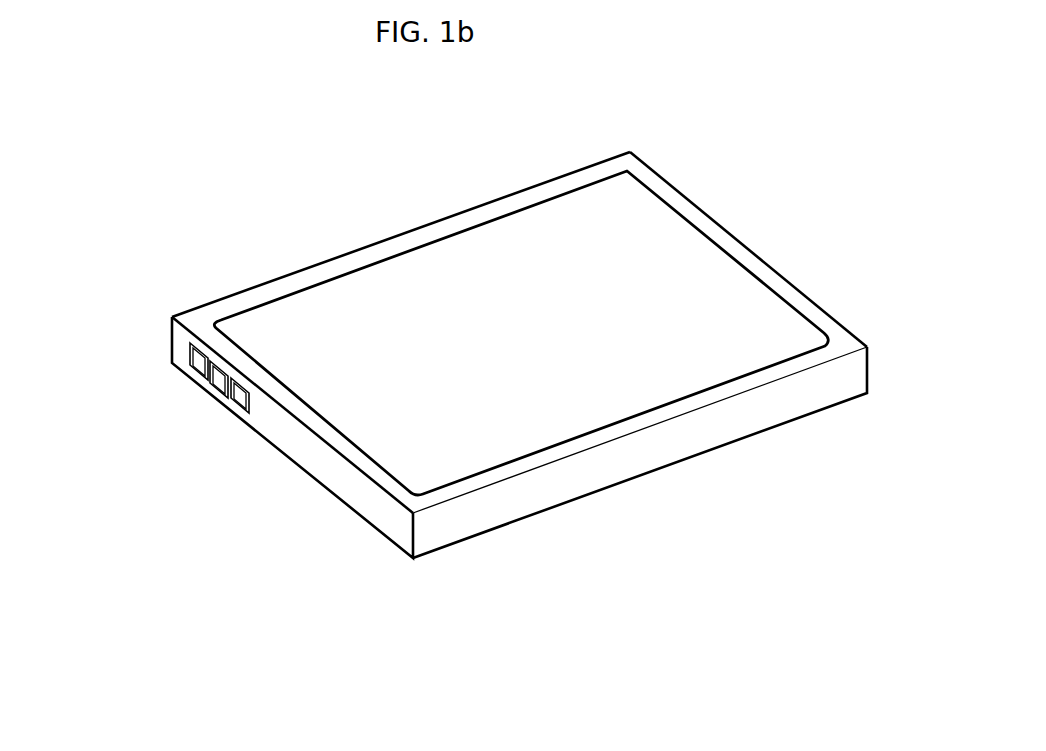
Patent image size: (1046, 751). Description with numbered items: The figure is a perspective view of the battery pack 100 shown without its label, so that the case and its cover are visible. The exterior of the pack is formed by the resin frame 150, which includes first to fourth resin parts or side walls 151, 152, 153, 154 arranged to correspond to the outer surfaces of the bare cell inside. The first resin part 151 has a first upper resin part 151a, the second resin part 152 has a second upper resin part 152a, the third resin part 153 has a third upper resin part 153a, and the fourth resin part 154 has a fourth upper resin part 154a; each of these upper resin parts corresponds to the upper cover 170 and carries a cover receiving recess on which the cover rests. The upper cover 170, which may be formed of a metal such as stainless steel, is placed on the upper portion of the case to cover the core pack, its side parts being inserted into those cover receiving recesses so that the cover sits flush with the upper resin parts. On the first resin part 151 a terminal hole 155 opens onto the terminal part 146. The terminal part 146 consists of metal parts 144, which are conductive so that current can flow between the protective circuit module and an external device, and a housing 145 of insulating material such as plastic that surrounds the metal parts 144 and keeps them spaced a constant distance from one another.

The battery pack 100 is at (170, 143).
The upper cover 170 is at (552, 223).
The resin frame 150 is at (792, 443).
The first resin part 151 is at (378, 510).
The first upper resin part 151a is at (373, 470).
The second resin part 152 is at (603, 470).
The second upper resin part 152a is at (500, 472).
The third resin part 153 is at (735, 232).
The third upper resin part 153a is at (787, 288).
The fourth resin part 154 is at (340, 253).
The fourth upper resin part 154a is at (253, 297).
The metal parts 144 is at (217, 395).
The housing 145 is at (195, 380).
The terminal part 146 is at (132, 467).
The terminal hole 155 is at (255, 410).